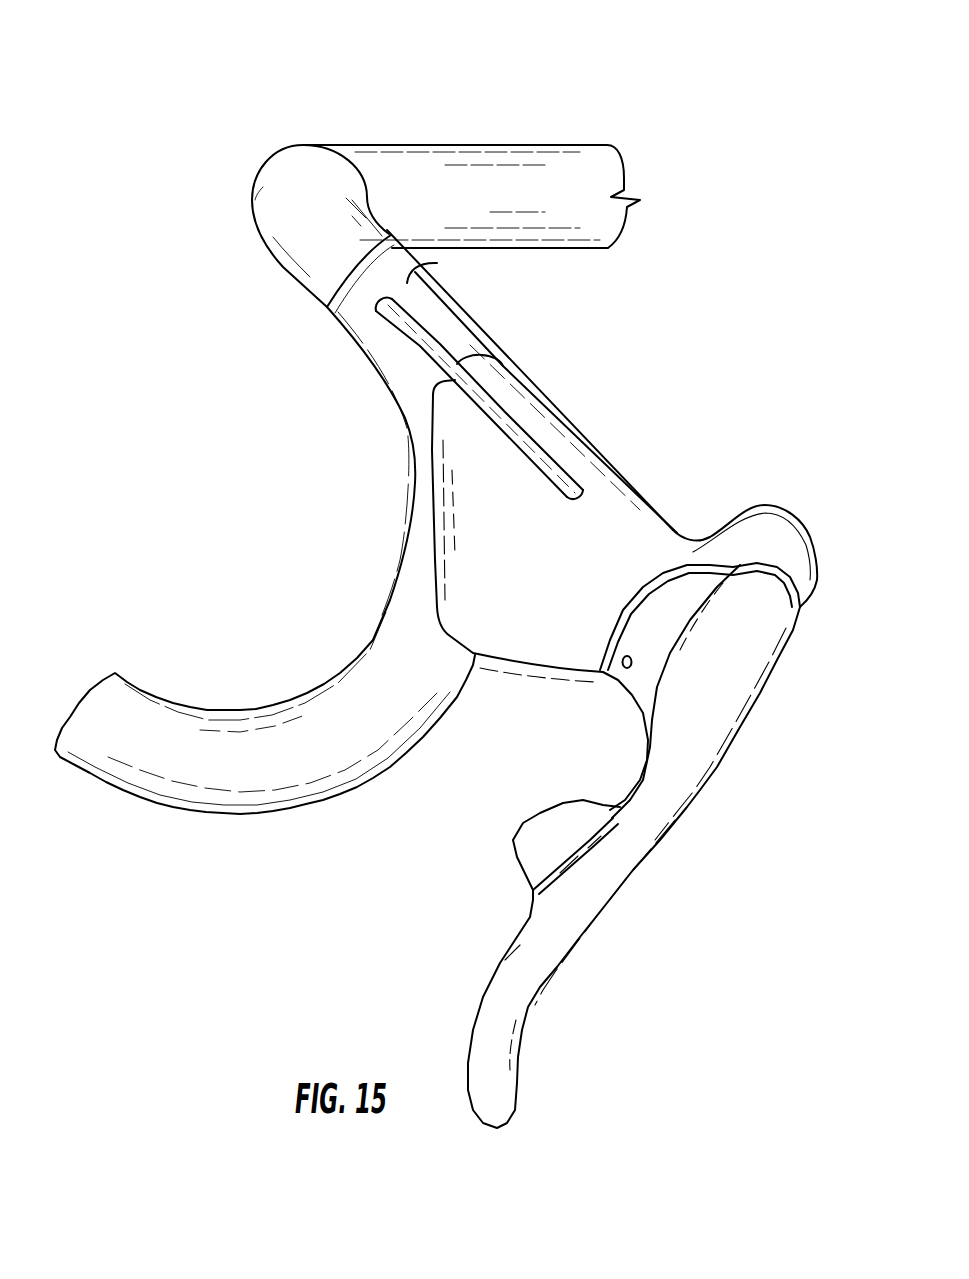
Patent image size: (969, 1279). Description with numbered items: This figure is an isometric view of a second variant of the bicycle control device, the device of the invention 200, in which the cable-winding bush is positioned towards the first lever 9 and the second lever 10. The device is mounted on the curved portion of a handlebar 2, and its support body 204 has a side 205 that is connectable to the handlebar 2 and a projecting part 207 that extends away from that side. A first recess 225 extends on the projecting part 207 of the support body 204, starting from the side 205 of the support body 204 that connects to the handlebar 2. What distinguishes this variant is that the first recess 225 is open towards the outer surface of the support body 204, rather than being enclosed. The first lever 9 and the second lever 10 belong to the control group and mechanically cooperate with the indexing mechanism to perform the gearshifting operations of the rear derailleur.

The device of the invention 200 is at (775, 103).
The handlebar 2 is at (235, 797).
The support body 204 is at (745, 445).
The side of the support body 205 is at (433, 517).
The projecting part 207 is at (607, 500).
The first recess 225 is at (540, 443).
The first lever 9 is at (523, 990).
The second lever 10 is at (530, 855).